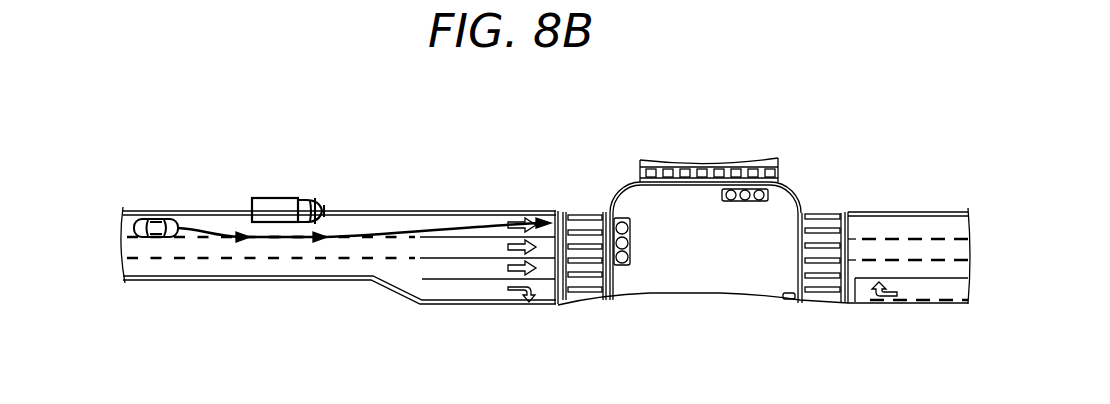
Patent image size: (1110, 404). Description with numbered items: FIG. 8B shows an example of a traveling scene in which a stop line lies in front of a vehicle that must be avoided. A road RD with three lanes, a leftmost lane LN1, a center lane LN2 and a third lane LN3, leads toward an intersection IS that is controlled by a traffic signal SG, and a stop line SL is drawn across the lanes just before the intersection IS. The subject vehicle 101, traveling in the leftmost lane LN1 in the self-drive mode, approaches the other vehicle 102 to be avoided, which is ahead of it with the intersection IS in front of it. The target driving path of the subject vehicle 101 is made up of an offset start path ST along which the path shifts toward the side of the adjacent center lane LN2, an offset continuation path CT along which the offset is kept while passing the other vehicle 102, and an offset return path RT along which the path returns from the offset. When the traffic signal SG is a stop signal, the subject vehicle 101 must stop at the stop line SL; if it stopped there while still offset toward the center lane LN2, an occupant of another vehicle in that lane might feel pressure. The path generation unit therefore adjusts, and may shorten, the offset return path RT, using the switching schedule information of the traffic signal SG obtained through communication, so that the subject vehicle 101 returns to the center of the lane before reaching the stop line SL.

The subject vehicle 101 is at (157, 218).
The other vehicle 102 is at (275, 197).
The offset start path ST is at (193, 229).
The offset return path RT is at (388, 226).
The offset continuation path CT is at (286, 238).
The road RD is at (172, 281).
The leftmost lane LN1 is at (121, 226).
The center lane LN2 is at (121, 250).
The third lane LN3 is at (121, 273).
The traffic signal SG is at (617, 219).
The stop line SL is at (559, 274).
The intersection IS is at (760, 296).